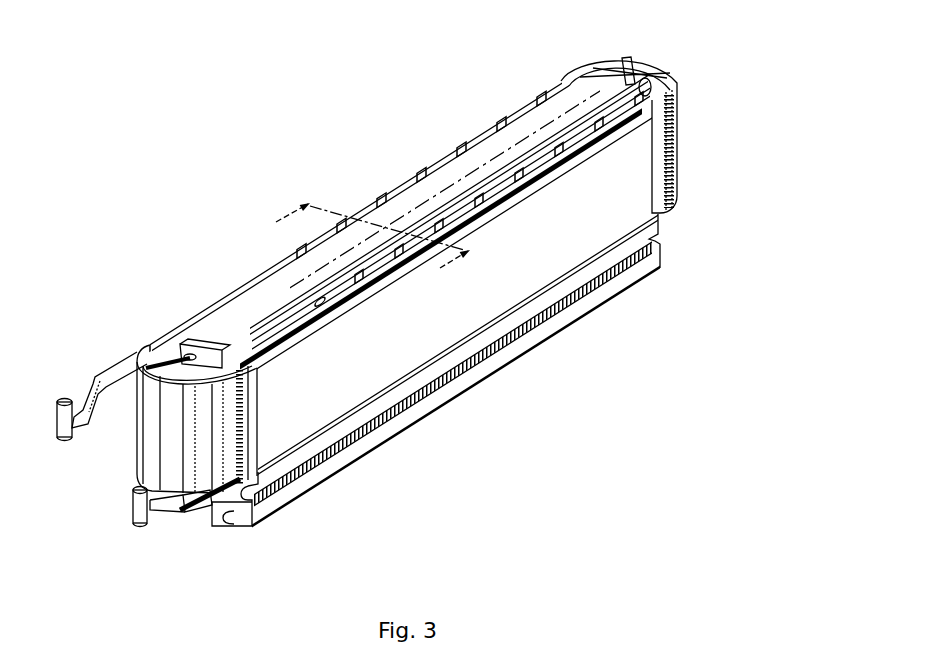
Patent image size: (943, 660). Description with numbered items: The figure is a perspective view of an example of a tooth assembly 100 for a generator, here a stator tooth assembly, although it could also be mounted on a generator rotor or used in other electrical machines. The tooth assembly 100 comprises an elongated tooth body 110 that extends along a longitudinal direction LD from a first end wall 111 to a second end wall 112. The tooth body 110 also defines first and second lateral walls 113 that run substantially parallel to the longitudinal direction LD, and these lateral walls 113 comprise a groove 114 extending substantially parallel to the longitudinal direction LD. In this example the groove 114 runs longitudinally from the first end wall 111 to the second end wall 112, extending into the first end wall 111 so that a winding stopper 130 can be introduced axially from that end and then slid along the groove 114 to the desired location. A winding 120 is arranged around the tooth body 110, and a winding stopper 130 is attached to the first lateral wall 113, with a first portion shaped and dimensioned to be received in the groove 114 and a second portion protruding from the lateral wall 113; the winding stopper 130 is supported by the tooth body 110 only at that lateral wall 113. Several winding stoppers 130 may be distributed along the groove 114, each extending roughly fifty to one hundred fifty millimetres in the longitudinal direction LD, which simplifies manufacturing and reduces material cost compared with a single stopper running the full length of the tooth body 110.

The tooth assembly 100 is at (162, 165).
The tooth body 110 is at (517, 364).
The first end wall 111 is at (243, 517).
The second end wall 112 is at (662, 257).
The lateral wall 113 is at (403, 420).
The groove 114 is at (676, 88).
The winding 120 is at (676, 137).
The winding stopper 130 is at (472, 138).
The longitudinal direction LD is at (672, 44).